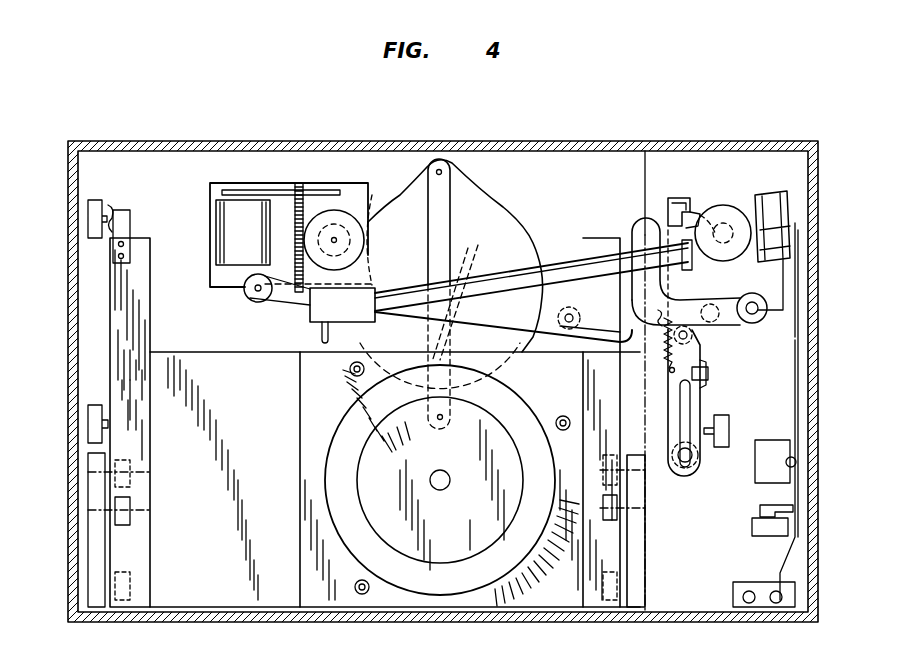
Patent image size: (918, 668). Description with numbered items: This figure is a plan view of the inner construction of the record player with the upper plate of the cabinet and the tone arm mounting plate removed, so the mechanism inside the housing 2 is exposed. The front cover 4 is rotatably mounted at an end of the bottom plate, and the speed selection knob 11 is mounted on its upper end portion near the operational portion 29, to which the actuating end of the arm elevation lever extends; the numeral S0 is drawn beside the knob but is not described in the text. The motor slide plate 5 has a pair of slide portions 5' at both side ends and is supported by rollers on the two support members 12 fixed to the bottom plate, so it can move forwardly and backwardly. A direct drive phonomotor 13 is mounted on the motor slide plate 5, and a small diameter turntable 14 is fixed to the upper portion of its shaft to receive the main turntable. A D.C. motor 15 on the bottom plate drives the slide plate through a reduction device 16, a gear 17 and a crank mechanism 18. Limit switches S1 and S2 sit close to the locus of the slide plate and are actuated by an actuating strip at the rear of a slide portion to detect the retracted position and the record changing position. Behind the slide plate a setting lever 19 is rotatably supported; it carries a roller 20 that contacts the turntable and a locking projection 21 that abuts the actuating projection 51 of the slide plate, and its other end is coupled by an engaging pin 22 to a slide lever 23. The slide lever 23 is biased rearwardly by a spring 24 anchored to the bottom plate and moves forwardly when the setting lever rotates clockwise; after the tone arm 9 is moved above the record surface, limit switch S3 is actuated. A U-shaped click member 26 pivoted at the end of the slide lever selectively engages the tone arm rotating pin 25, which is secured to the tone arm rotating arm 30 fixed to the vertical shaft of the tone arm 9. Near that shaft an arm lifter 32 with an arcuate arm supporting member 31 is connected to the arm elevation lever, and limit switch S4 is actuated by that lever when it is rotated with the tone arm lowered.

The housing 2 is at (797, 380).
The front cover 4 is at (279, 613).
The motor slide plate 5 is at (381, 506).
The slide portions 5' is at (366, 558).
The tone arm 9 is at (550, 265).
The speed selection knob 11 is at (750, 604).
The support members 12 is at (96, 550).
The phonomotor 13 is at (424, 580).
The small diameter turntable 14 is at (424, 580).
The D.C. motor 15 is at (235, 200).
The reduction device 16 is at (350, 215).
The gear 17 is at (495, 215).
The crank mechanism 18 is at (445, 185).
The setting lever 19 is at (508, 300).
The roller 20 is at (256, 300).
The locking projection 21 is at (468, 262).
The engaging pin 22 is at (738, 327).
The slide lever 23 is at (702, 345).
The spring 24 is at (662, 347).
The tone arm rotating pin 25 is at (698, 206).
The U-shaped click member 26 is at (684, 198).
The operational portion 29 is at (797, 596).
The tone arm rotating arm 30 is at (738, 212).
The arcuate arm supporting member 31 is at (748, 292).
The arm lifter 32 is at (770, 316).
The actuating projection 51 is at (372, 352).
The switch S0 is at (777, 604).
The limit switch S1 is at (95, 200).
The limit switch S2 is at (93, 405).
The limit switch S3 is at (728, 430).
The limit switch S4 is at (780, 522).